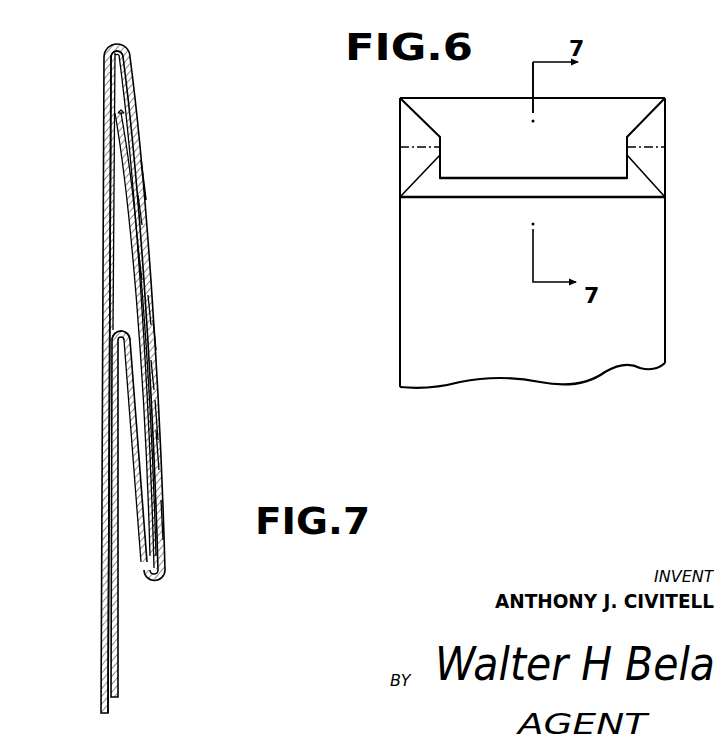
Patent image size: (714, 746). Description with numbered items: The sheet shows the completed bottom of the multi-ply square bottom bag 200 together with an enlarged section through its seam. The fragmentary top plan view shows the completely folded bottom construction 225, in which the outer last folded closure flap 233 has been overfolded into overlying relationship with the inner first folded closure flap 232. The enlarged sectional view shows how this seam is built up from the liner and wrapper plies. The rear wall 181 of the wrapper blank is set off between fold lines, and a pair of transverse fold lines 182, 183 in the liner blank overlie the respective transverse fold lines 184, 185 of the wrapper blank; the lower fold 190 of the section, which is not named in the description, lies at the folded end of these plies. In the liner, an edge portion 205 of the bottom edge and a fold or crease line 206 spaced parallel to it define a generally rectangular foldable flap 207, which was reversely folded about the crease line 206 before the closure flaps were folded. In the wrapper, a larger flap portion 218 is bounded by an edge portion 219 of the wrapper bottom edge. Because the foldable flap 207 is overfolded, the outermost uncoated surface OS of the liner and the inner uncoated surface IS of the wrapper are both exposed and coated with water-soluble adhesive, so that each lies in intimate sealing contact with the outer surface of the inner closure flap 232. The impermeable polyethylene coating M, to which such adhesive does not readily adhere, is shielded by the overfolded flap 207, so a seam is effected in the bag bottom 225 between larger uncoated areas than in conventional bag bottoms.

In FIG. 7, the rear wall 181 is at (103, 625).
In FIG. 7, the transverse fold line 182 is at (118, 322).
In FIG. 7, the transverse fold line 183 is at (124, 61).
In FIG. 7, the transverse fold line 184 is at (122, 346).
In FIG. 7, the transverse fold line 185 is at (118, 46).
In FIG. 7, the bottom fold 190 is at (148, 579).
In FIG. 6, the multi-ply square bottom bag 200 is at (525, 364).
In FIG. 7, the edge portion 205 is at (140, 210).
In FIG. 7, the fold or crease line 206 is at (153, 375).
In FIG. 7, the foldable flap 207 is at (151, 310).
In FIG. 7, the flap portion 218 is at (158, 420).
In FIG. 7, the edge portion 219 is at (161, 523).
In FIG. 7, the bottom construction 225 is at (162, 240).
In FIG. 6, the bottom construction 225 is at (592, 112).
In FIG. 7, the inner first folded closure flap 232 is at (125, 243).
In FIG. 6, the inner first folded closure flap 232 is at (516, 198).
In FIG. 7, the outer last folded closure flap 233 is at (144, 175).
In FIG. 6, the outer last folded closure flap 233 is at (497, 164).
In FIG. 7, the outermost uncoated surface OS is at (141, 263).
In FIG. 7, the inner uncoated surface IS is at (159, 448).
In FIG. 7, the polyethylene coating M is at (156, 335).